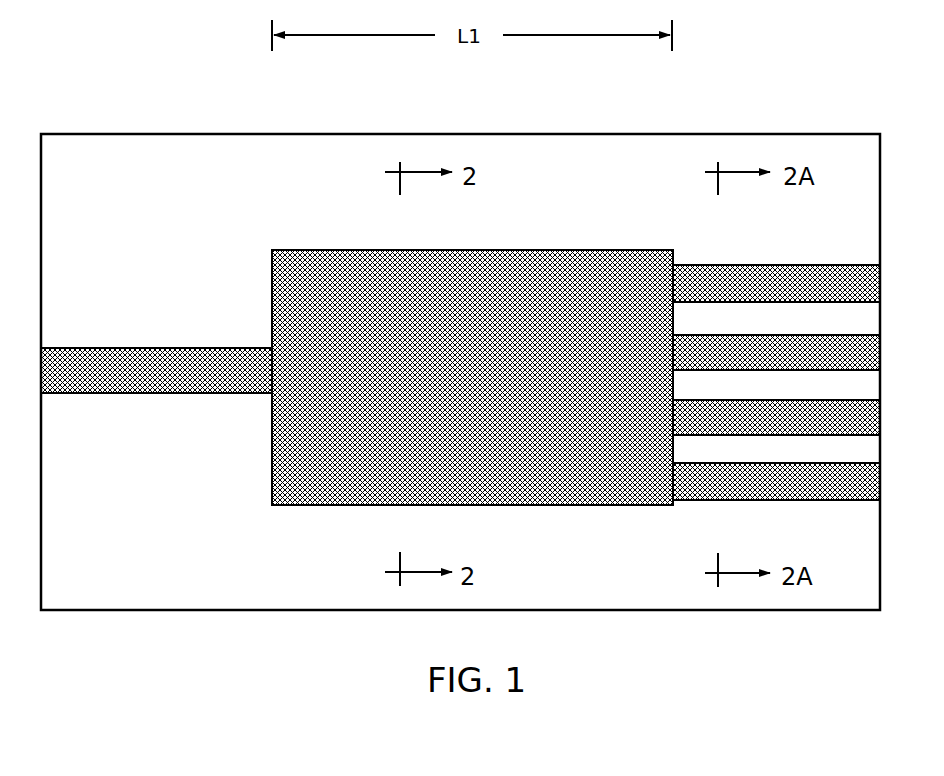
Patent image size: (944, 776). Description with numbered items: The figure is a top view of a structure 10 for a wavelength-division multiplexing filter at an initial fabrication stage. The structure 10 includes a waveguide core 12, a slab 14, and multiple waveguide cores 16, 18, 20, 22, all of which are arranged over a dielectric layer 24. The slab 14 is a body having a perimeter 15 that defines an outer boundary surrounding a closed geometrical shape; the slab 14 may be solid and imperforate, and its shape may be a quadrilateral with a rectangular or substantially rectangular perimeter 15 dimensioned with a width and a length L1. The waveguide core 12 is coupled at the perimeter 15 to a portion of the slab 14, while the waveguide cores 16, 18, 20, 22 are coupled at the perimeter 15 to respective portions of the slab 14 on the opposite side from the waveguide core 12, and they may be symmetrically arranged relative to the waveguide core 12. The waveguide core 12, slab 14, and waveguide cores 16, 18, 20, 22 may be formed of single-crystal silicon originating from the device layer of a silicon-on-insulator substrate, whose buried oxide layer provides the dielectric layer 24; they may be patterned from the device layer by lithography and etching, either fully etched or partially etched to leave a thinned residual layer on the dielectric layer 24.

The structure 10 is at (460, 372).
The waveguide core 12 is at (183, 373).
The slab 14 is at (538, 305).
The perimeter 15 is at (272, 290).
The waveguide core 16 is at (773, 487).
The waveguide core 18 is at (737, 417).
The waveguide core 20 is at (727, 352).
The waveguide core 22 is at (770, 285).
The dielectric layer 24 is at (128, 580).